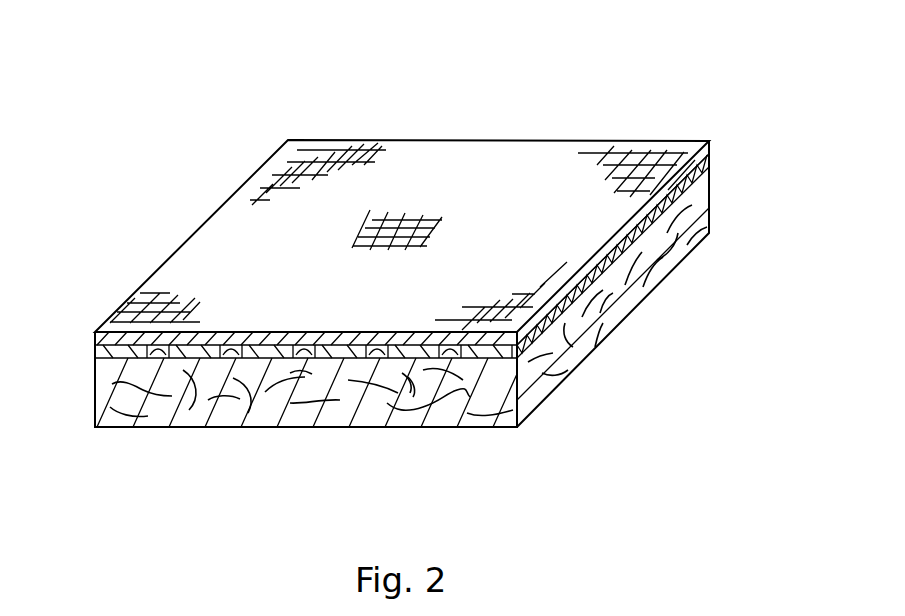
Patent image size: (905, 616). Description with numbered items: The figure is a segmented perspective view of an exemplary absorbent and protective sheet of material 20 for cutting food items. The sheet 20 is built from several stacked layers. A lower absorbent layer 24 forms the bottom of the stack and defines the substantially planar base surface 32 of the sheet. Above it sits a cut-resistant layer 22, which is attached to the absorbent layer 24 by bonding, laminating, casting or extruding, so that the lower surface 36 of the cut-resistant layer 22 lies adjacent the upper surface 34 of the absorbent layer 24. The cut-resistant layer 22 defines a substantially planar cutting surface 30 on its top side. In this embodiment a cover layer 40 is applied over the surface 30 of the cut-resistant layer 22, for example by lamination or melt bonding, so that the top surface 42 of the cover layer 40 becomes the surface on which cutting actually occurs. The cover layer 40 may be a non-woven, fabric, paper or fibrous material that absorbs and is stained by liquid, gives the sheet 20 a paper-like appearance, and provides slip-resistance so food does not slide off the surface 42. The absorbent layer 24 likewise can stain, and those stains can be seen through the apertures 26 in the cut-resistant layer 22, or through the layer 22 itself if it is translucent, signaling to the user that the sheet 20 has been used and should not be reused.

The absorbent and protective sheet of material 20 is at (705, 85).
The cut-resistant layer 22 is at (93, 355).
The absorbent layer 24 is at (450, 415).
The apertures 26 is at (162, 350).
The cutting surface 30 is at (125, 343).
The base surface 32 is at (195, 425).
The upper surface of the absorbent layer 34 is at (490, 337).
The lower surface of the cut-resistant layer 36 is at (377, 358).
The cover layer 40 is at (415, 337).
The top surface of the cover layer 42 is at (412, 222).